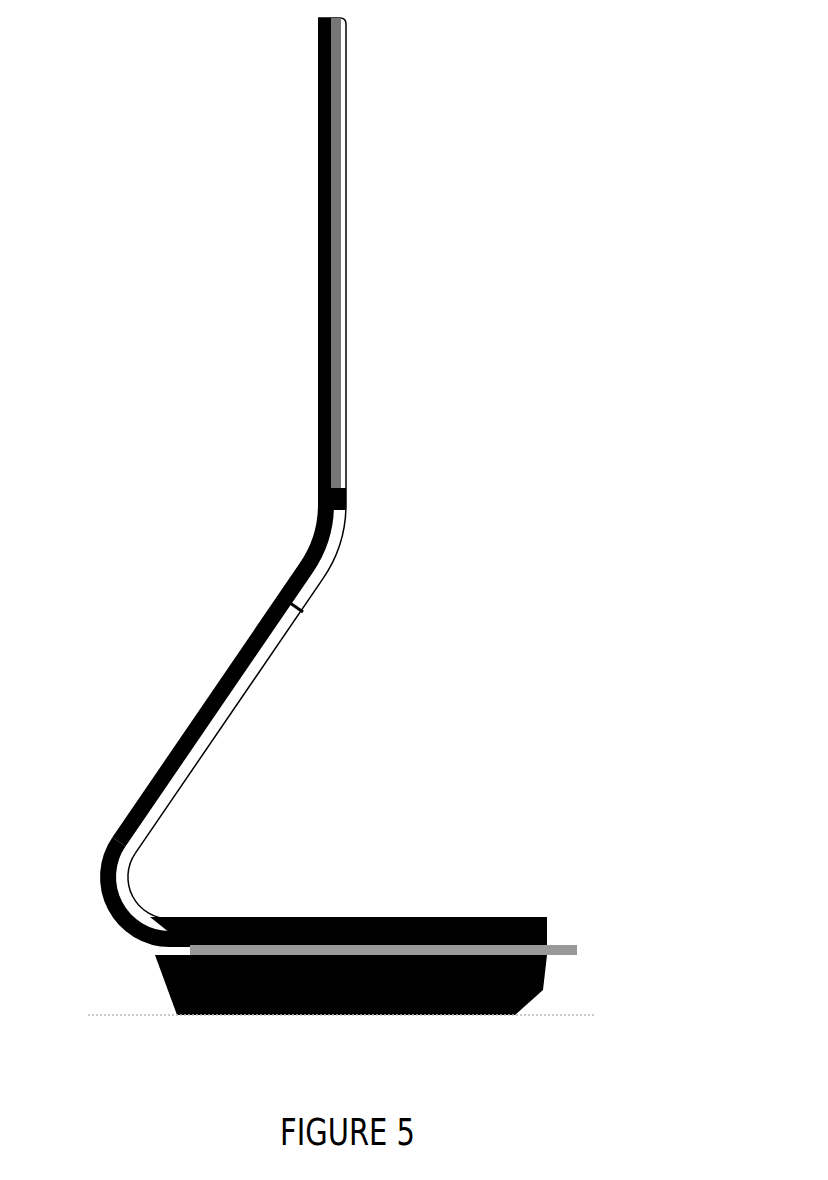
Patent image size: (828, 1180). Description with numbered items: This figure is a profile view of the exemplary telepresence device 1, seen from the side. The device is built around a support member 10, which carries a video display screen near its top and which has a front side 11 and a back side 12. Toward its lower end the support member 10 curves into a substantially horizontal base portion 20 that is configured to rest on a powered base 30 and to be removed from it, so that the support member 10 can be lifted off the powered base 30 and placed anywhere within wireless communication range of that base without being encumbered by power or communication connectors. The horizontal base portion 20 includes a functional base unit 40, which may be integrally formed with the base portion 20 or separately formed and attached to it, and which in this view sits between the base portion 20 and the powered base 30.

The telepresence device 1 is at (152, 187).
The support member 10 is at (337, 537).
The front side 11 is at (322, 305).
The back side 12 is at (338, 253).
The horizontal base portion 20 is at (192, 945).
The powered base 30 is at (518, 1005).
The functional base unit 40 is at (515, 960).